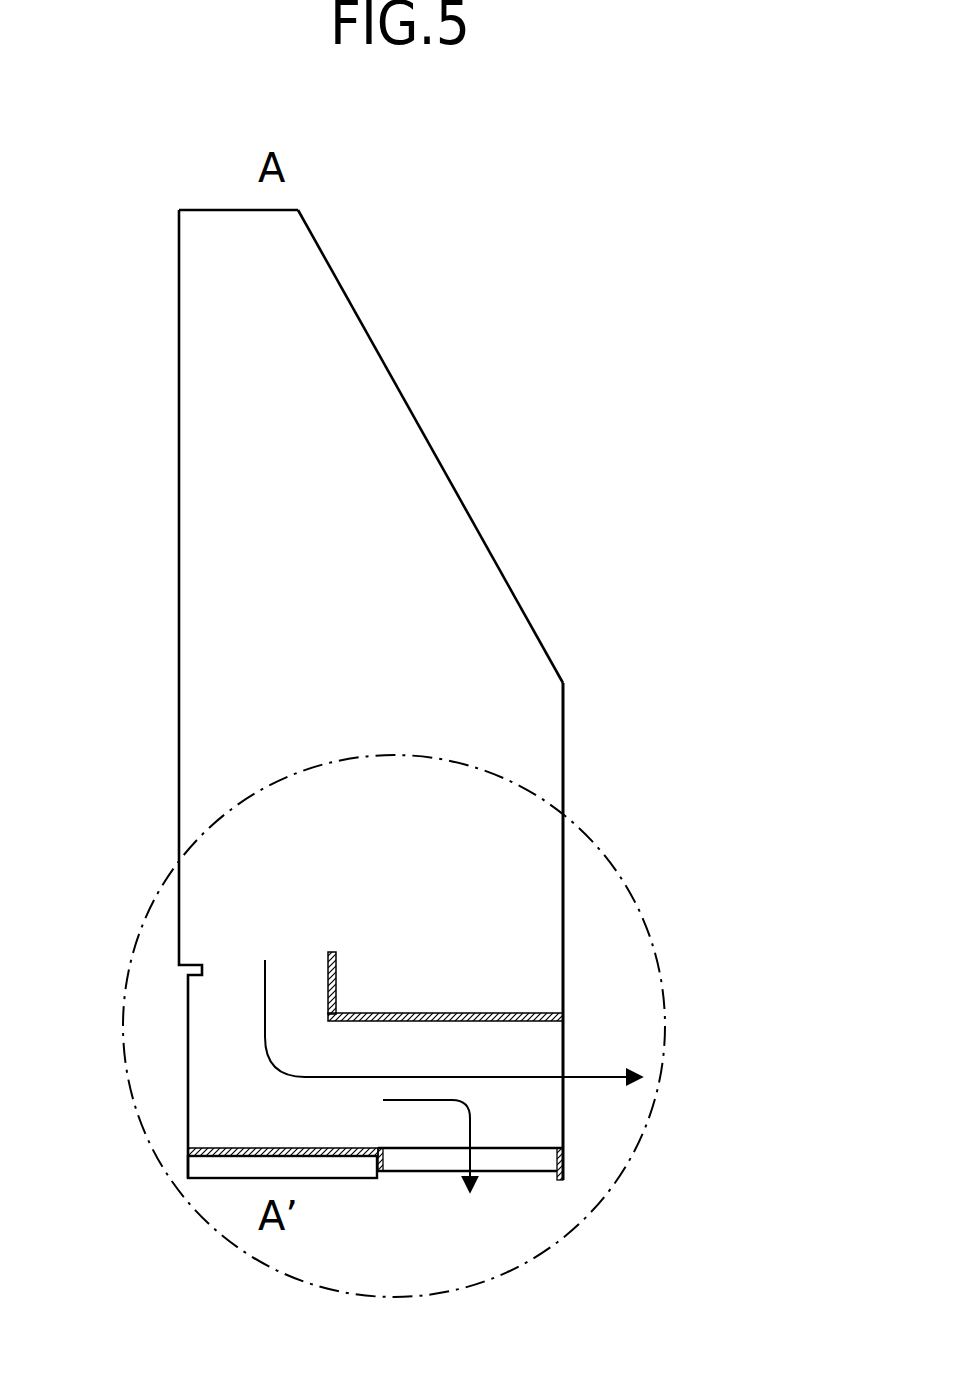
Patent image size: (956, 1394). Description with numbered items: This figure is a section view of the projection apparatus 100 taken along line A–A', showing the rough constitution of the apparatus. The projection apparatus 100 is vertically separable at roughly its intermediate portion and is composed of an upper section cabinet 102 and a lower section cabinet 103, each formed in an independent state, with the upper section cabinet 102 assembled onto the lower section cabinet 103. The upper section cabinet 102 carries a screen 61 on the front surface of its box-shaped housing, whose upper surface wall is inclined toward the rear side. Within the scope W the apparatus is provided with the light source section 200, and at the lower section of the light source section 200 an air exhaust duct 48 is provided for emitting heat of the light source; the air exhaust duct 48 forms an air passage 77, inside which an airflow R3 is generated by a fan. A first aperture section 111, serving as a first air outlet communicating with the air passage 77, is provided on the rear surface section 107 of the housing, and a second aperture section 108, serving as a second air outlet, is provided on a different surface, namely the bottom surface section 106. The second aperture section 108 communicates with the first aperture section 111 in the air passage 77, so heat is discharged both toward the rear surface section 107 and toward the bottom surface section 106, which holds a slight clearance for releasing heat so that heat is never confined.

The projection apparatus 100 is at (528, 204).
The screen 61 is at (178, 455).
The upper section cabinet 102 is at (540, 633).
The rear surface section 107 is at (563, 720).
The air exhaust duct 48 is at (407, 1012).
The scope W is at (632, 883).
The light source section 200 is at (530, 992).
The air passage 77 is at (540, 1037).
The airflow R3 is at (408, 1076).
The lower section cabinet 103 is at (186, 1100).
The first aperture section 111 is at (563, 1118).
The bottom surface section 106 is at (410, 1192).
The second aperture section 108 is at (513, 1163).